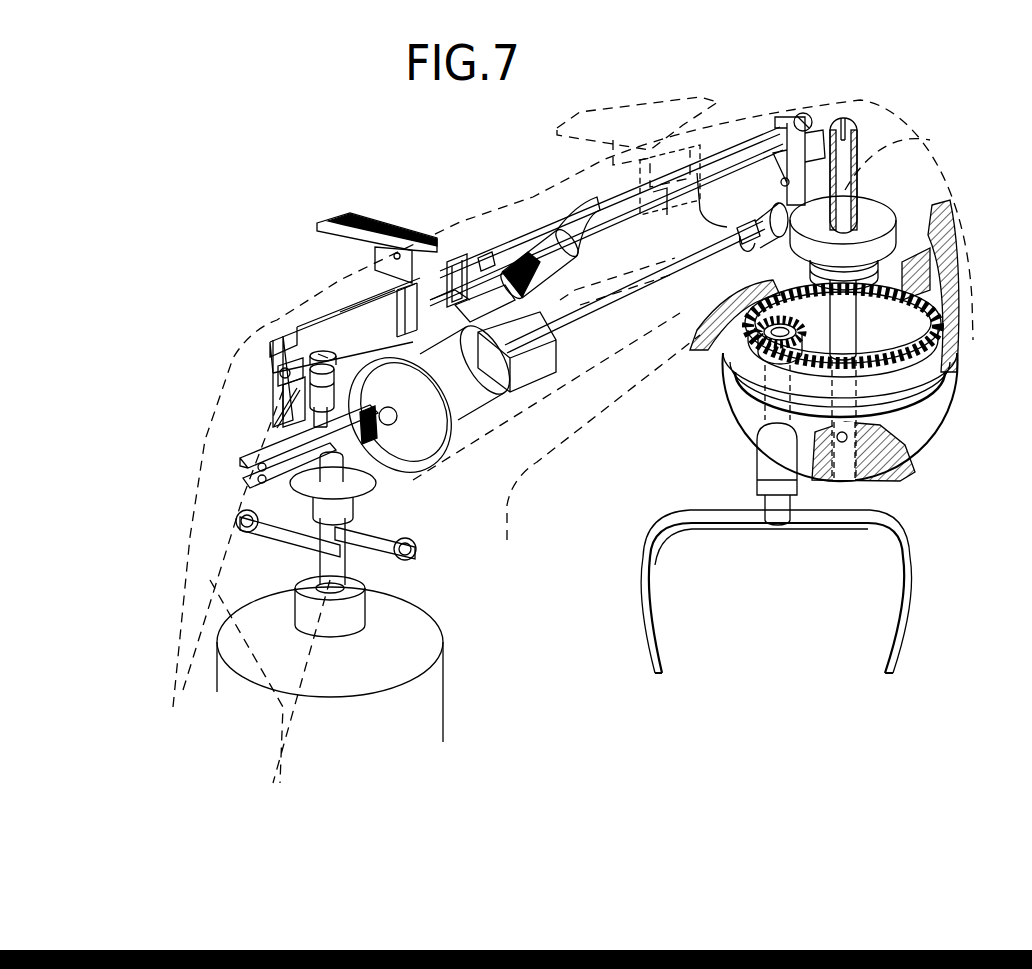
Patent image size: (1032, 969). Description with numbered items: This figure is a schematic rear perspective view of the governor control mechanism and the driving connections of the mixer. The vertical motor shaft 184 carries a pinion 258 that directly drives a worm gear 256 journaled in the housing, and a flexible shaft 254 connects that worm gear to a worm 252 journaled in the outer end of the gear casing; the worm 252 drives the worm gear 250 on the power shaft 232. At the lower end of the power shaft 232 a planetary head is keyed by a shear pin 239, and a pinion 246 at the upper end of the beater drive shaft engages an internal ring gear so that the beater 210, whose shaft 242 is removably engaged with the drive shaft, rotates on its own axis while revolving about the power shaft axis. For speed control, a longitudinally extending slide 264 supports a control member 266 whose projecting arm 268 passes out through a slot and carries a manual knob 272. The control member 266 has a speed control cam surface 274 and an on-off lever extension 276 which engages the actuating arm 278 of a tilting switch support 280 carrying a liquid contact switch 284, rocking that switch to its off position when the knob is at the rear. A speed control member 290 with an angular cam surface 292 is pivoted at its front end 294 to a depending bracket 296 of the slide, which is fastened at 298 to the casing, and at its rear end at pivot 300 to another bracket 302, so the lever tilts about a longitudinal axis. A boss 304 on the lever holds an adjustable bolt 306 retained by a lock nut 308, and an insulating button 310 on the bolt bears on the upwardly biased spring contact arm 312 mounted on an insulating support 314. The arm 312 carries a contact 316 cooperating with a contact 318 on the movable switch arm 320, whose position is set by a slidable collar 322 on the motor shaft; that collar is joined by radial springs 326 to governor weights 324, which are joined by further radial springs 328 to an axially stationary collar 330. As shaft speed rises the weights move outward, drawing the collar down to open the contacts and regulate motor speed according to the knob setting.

The motor shaft 184 is at (380, 328).
The beater 210 is at (655, 644).
The power shaft 232 is at (847, 153).
The shear pin 239 is at (848, 437).
The beater shaft 242 is at (765, 420).
The pinion 246 is at (747, 342).
The worm gear 250 is at (833, 247).
The worm 252 is at (778, 206).
The flexible shaft 254 is at (700, 262).
The worm gear 256 is at (445, 431).
The pinion 258 is at (352, 390).
The support or slide 264 is at (727, 150).
The control member 266 is at (478, 258).
The projecting arm 268 is at (453, 257).
The manual knob 272 is at (317, 223).
The speed control cam surface 274 is at (392, 292).
The on-off lever extension 276 is at (483, 325).
The actuating arm 278 is at (500, 348).
The switch support 280 is at (597, 293).
The liquid contact switch 284 is at (557, 233).
The speed control member 290 is at (662, 193).
The cam or actuating surface 292 is at (502, 262).
The front pivot 294 is at (783, 180).
The depending bracket 296 is at (822, 150).
The fastening 298 is at (798, 114).
The rear pivot 300 is at (284, 373).
The bracket 302 is at (276, 357).
The boss 304 is at (300, 413).
The bolt 306 is at (318, 350).
The lock nut 308 is at (300, 397).
The insulating button 310 is at (318, 427).
The spring contact arm 312 is at (270, 452).
The insulating support 314 is at (368, 425).
The contact 316 is at (258, 470).
The contact 318 is at (262, 481).
The movable switch arm 320 is at (273, 494).
The slidable collar 322 is at (358, 481).
The governor weights 324 is at (411, 553).
The radial springs 326 is at (362, 527).
The radial springs 328 is at (283, 538).
The axially stationary collar 330 is at (318, 584).